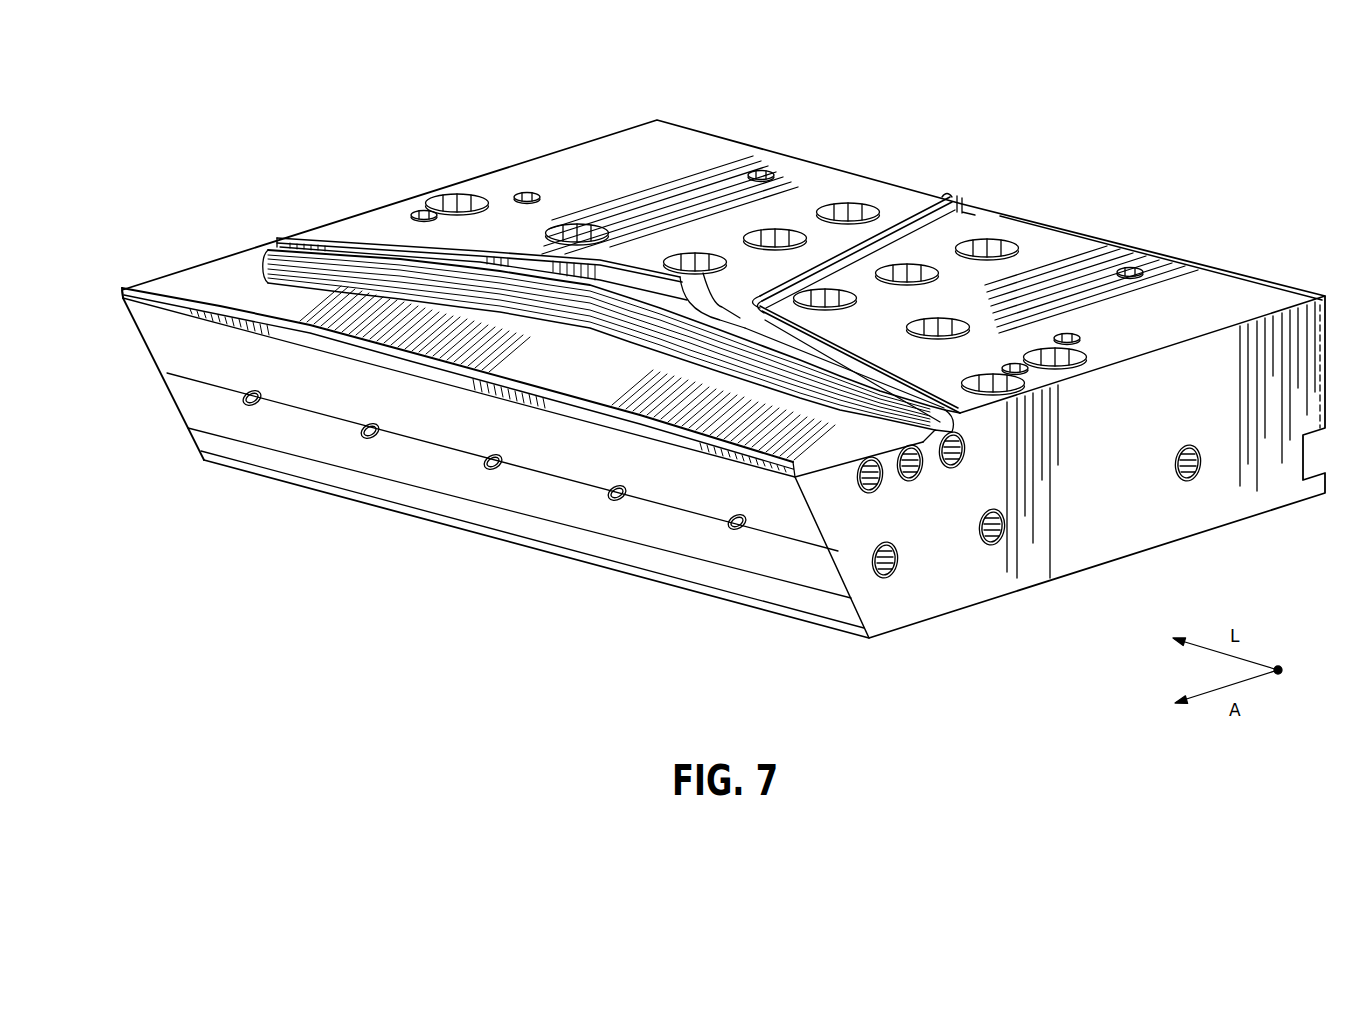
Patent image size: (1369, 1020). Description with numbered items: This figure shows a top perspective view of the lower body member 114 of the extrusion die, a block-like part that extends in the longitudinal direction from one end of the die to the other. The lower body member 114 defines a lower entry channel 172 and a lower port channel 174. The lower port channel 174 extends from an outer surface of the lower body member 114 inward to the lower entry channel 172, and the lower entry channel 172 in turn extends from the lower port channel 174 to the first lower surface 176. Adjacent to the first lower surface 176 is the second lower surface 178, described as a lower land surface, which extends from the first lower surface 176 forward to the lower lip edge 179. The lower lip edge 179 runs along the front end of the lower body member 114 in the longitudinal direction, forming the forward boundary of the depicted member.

The lower body member 114 is at (1173, 167).
The lower entry channel 172 is at (430, 250).
The lower port channel 174 is at (921, 226).
The first lower surface 176 is at (372, 255).
The second lower surface 178 is at (260, 287).
The lower lip edge 179 is at (135, 283).